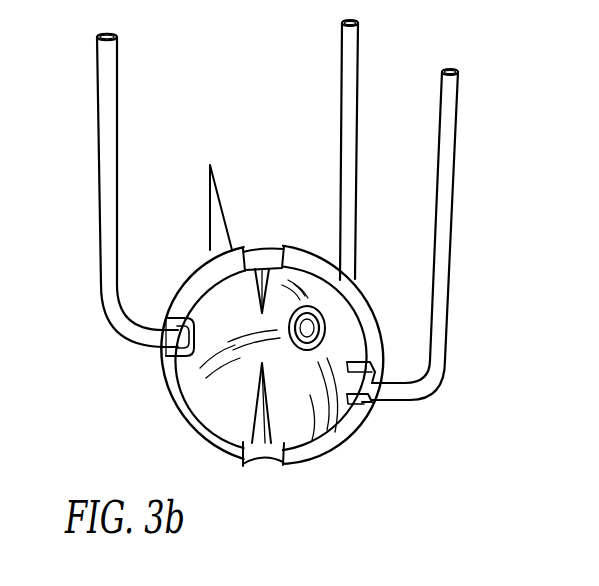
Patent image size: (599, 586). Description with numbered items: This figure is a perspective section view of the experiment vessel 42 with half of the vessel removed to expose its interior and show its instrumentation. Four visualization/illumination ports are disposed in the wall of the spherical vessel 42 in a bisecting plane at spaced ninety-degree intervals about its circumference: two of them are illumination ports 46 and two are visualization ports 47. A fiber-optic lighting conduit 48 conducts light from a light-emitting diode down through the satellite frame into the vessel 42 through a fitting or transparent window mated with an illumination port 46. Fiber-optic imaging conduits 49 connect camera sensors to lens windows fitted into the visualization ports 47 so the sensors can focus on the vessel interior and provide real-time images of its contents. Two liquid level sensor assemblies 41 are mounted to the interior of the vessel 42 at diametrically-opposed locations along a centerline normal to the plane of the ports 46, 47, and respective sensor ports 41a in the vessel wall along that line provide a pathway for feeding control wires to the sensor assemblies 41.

The liquid level sensor assembly 41 is at (256, 292).
The sensor port 41a is at (272, 250).
The experiment vessel 42 is at (159, 403).
The illumination port 46 is at (370, 399).
The visualization port 47 is at (166, 351).
The fiber-optic lighting conduit 48 is at (443, 262).
The fiber-optic imaging conduit 49 is at (99, 188).